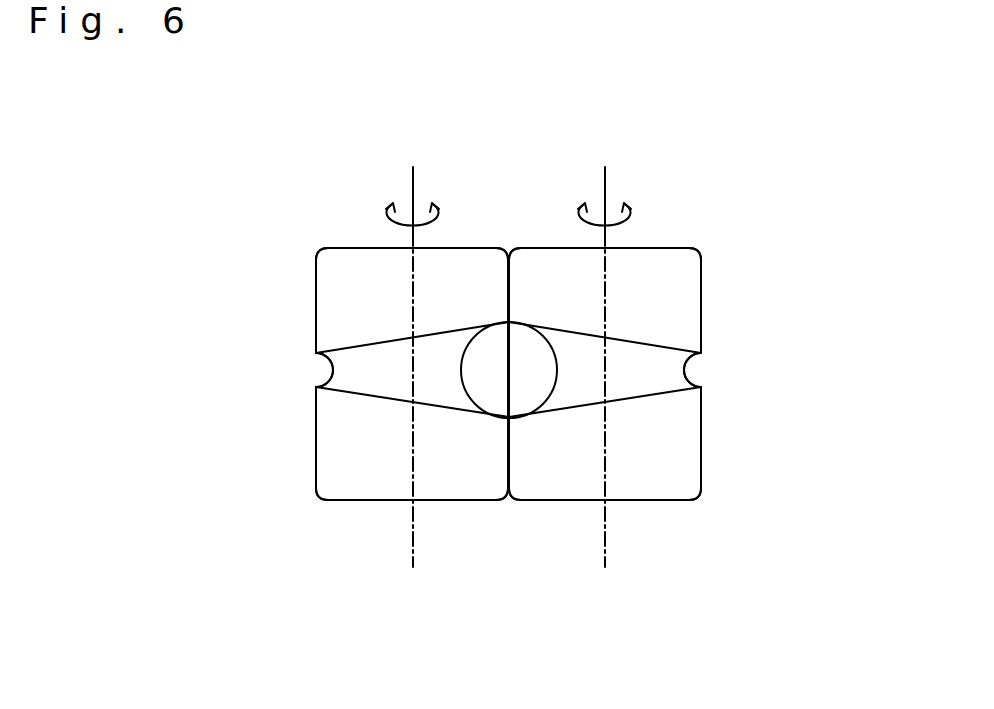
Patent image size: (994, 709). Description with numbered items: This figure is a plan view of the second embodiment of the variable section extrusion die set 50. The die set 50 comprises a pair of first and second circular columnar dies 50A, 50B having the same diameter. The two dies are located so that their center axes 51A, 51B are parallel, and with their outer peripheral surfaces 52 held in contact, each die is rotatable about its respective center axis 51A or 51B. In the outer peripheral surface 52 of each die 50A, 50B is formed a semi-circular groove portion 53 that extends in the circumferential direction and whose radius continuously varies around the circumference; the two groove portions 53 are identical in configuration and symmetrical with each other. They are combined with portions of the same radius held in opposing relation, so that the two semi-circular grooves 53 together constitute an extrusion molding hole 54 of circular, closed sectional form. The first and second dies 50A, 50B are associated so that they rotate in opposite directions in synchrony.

The variable section extrusion die set 50 is at (751, 231).
The first circular columnar die 50A is at (314, 278).
The second circular columnar die 50B is at (703, 297).
The center axis of first die 51A is at (410, 178).
The center axis of second die 51B is at (608, 178).
The outer peripheral surface 52 is at (331, 316).
The semi-circular groove portion 53 is at (350, 390).
The extrusion molding hole 54 is at (483, 393).